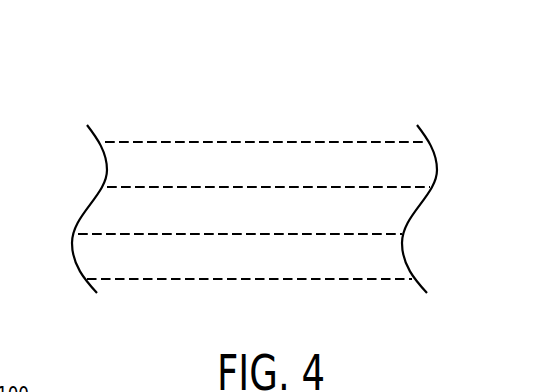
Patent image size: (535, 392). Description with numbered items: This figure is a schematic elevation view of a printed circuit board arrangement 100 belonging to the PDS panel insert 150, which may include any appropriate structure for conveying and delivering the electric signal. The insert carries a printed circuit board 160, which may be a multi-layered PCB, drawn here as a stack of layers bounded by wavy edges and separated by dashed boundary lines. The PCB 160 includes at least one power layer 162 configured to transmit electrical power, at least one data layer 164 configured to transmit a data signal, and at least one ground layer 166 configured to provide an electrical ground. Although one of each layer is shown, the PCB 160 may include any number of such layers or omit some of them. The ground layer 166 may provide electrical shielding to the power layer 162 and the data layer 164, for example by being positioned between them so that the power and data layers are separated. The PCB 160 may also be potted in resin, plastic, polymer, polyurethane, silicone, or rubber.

The absorbent article / layered structure 100 is at (155, 37).
The PDS panel insert 150 is at (163, 68).
The printed circuit board 160 is at (168, 97).
The power layer 162 is at (252, 167).
The data layer 164 is at (298, 210).
The ground layer 166 is at (310, 250).